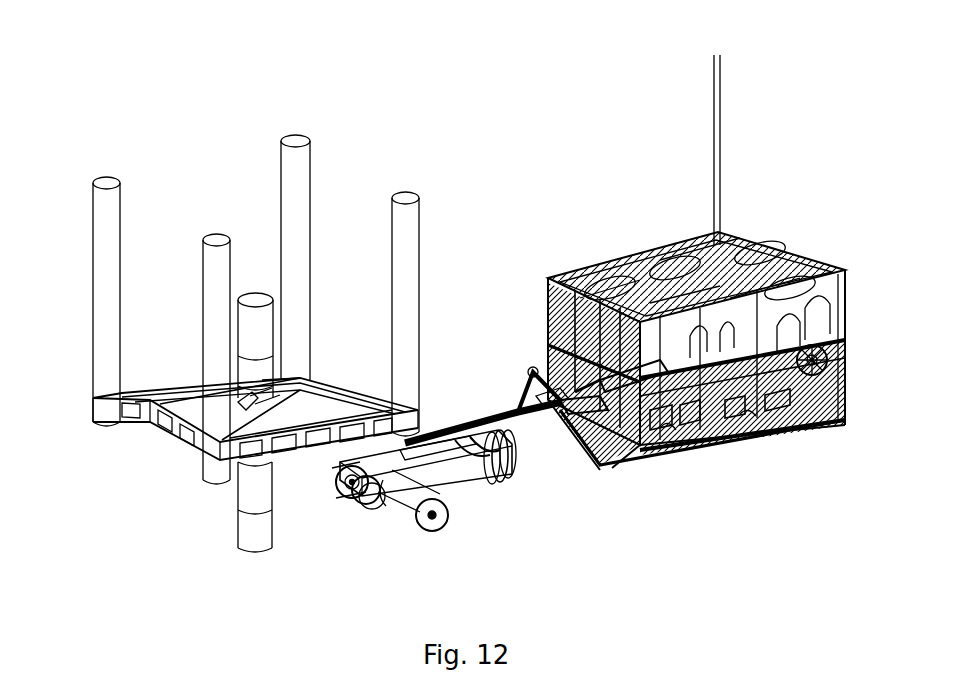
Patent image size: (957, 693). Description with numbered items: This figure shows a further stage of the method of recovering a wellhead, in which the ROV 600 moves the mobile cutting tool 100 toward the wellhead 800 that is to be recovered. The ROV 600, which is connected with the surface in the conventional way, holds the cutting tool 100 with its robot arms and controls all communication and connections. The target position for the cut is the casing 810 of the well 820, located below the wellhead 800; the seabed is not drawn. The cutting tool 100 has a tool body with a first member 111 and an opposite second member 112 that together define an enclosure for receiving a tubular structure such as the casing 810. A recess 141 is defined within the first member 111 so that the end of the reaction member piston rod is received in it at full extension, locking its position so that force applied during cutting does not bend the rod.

The well 820 is at (160, 200).
The wellhead 800 is at (240, 330).
The casing 810 is at (238, 527).
The mobile cutting tool 100 is at (470, 505).
The first member 111 is at (332, 484).
The recess 141 is at (352, 490).
The second member 112 is at (355, 497).
The ROV 600 is at (772, 268).